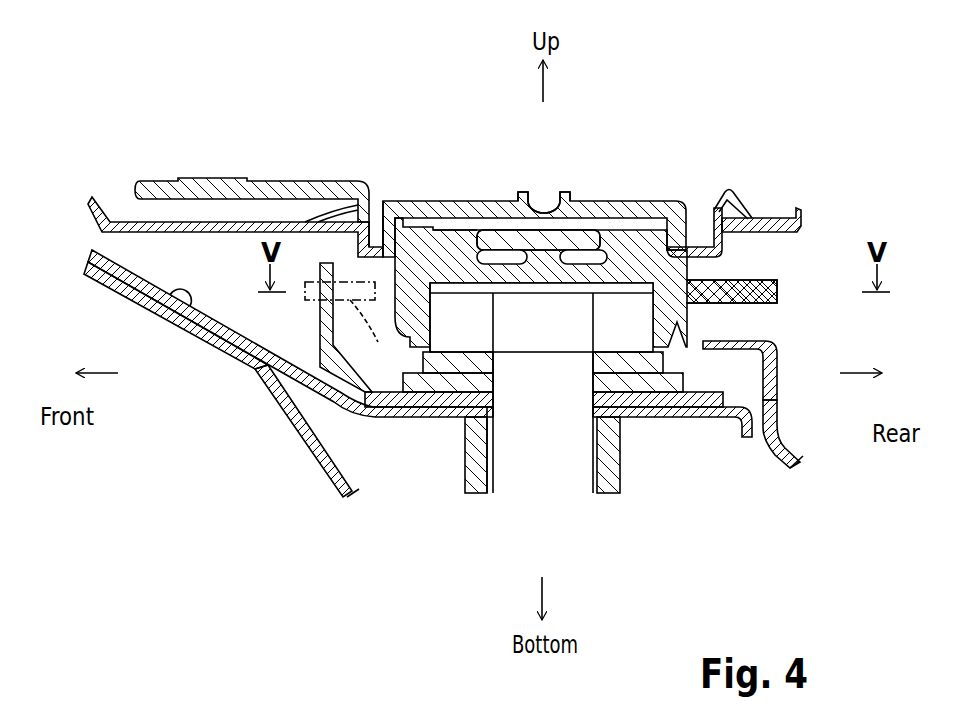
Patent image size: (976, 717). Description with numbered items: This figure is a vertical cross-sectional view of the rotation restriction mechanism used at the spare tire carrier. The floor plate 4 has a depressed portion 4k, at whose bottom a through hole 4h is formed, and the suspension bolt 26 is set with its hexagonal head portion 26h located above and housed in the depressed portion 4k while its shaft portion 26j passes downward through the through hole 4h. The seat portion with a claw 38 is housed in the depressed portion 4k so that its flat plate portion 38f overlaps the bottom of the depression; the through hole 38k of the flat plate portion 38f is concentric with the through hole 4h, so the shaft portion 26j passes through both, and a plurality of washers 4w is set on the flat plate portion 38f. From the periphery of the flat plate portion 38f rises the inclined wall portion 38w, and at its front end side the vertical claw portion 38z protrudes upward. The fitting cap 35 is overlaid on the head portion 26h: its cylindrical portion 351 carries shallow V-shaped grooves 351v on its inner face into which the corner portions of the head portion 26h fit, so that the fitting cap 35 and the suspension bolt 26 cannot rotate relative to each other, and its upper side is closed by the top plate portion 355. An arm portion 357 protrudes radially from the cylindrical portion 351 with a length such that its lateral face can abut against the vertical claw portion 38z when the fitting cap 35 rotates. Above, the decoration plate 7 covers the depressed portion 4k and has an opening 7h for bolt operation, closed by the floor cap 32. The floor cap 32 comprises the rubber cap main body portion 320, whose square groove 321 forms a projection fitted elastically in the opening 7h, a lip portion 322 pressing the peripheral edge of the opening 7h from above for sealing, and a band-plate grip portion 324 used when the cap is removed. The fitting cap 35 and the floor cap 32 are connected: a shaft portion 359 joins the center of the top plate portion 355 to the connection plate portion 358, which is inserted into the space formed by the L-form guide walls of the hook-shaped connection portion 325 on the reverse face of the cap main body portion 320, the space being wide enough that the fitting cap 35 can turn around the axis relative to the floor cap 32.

The floor plate 4 is at (130, 278).
The depressed portion 4k is at (165, 322).
The through hole 4h is at (470, 485).
The washers 4w is at (768, 416).
The decoration plate 7 is at (157, 220).
The opening for bolt operation 7h is at (376, 245).
The suspension bolt 26 is at (563, 425).
The head portion 26h is at (670, 383).
The shaft portion 26j is at (541, 455).
The floor cap 32 is at (584, 196).
The cap main body portion 320 is at (494, 205).
The square groove 321 is at (391, 204).
The lip portion 322 is at (328, 217).
The grip portion 324 is at (285, 192).
The hook-shaped connection portion 325 is at (455, 226).
The fitting cap 35 is at (708, 273).
The cylindrical portion 351 is at (686, 306).
The V-shaped grooves 351v is at (455, 300).
The top plate portion 355 is at (722, 262).
The arm portion 357 is at (686, 313).
The connection plate portion 358 is at (600, 238).
The shaft portion 359 is at (633, 256).
The seat portion with a claw 38 is at (314, 342).
The vertical claw portion 38z is at (318, 323).
The inclined wall portion 38w is at (310, 413).
The flat plate portion 38f is at (654, 398).
The through hole 38k is at (492, 404).